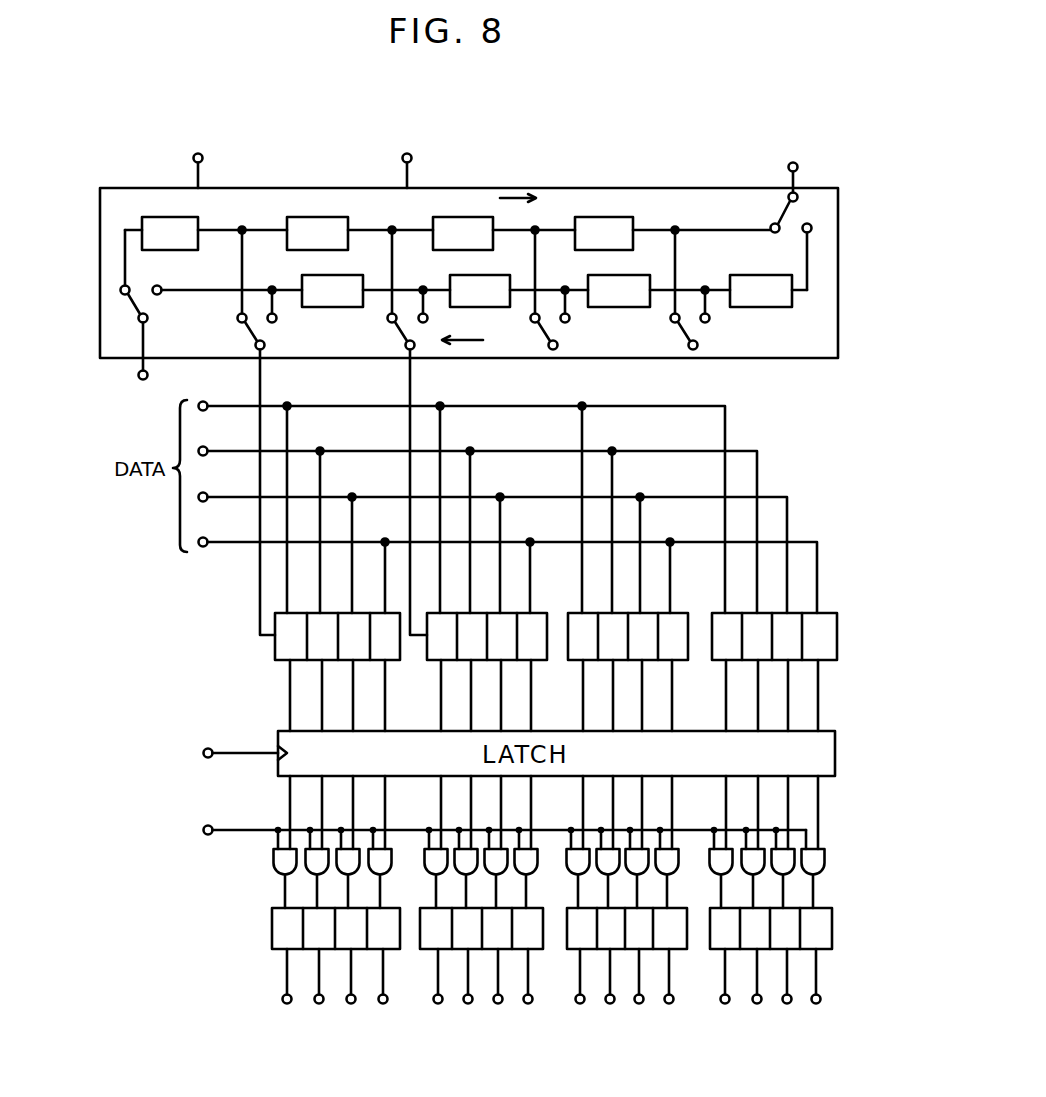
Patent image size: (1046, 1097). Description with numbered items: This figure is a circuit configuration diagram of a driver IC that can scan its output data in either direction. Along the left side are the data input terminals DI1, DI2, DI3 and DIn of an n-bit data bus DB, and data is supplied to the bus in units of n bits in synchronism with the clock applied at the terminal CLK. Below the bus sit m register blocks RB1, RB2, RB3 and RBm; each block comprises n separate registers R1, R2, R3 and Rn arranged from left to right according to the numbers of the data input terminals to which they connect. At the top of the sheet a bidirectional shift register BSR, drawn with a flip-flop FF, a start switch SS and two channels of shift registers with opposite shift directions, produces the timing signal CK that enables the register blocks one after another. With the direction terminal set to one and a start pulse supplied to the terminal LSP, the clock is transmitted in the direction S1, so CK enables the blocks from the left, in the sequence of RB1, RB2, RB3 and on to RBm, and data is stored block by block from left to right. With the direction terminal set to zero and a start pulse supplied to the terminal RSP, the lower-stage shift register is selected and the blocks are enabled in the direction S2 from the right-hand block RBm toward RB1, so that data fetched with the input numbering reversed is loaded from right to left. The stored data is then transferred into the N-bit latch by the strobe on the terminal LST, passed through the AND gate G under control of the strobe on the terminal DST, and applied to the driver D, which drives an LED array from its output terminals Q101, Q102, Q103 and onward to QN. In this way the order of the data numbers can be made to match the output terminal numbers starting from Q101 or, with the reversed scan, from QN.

The bidirectional shift register BSR is at (602, 188).
The clock input terminal CLK is at (193, 158).
The right start pulse terminal RSP is at (789, 166).
The first shift direction S1 is at (505, 202).
The second shift direction S2 is at (478, 344).
The flip-flop FF is at (170, 233).
The start switch SS is at (149, 282).
The left start pulse terminal LSP is at (148, 377).
The timing signal CK is at (264, 385).
The data bus DB is at (388, 543).
The first data input terminal DI1 is at (206, 410).
The second data input terminal DI2 is at (206, 455).
The third data input terminal DI3 is at (206, 501).
The n-th data input terminal DIn is at (206, 546).
The first register R1 is at (293, 636).
The second register R2 is at (323, 636).
The third register R3 is at (355, 636).
The n-th register Rn is at (382, 679).
The first register block RB1 is at (321, 672).
The second register block RB2 is at (430, 661).
The third register block RB3 is at (571, 661).
The m-th register block RBm is at (715, 661).
The latch strobe terminal LST is at (207, 748).
The driver strobe terminal DST is at (207, 825).
The AND gate G is at (274, 860).
The driver D is at (271, 927).
The output terminal Q101 is at (286, 1004).
The output terminal Q102 is at (319, 1004).
The output terminal Q103 is at (350, 1004).
The N-th output terminal QN is at (816, 1004).